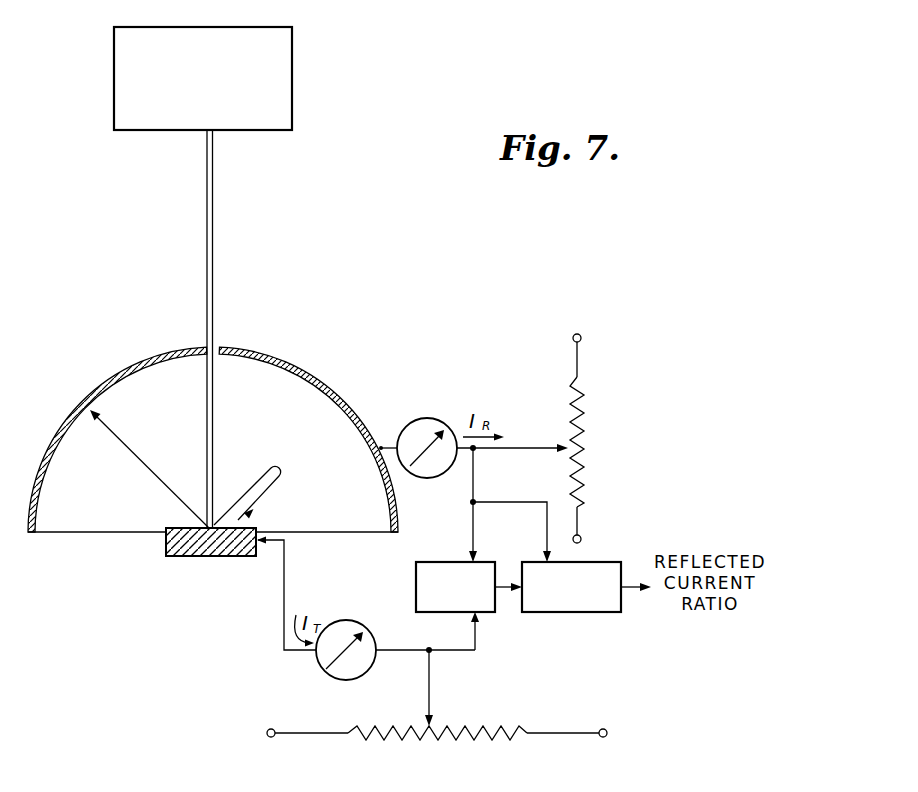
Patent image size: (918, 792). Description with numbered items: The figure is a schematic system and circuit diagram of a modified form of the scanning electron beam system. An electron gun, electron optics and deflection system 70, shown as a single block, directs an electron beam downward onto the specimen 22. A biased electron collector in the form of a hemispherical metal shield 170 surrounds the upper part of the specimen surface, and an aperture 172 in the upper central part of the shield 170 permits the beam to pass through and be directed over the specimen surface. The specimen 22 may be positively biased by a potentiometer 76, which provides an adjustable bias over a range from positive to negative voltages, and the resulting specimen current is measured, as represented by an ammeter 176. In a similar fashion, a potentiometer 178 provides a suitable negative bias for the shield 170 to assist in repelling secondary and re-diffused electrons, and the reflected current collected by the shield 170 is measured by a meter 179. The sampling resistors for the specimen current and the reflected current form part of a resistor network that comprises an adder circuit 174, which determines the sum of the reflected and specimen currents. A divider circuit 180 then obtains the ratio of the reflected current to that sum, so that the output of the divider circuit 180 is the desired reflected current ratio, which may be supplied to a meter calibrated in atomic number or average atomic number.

The electron gun, electron optics, and deflection system 70 is at (293, 86).
The aperture 172 is at (218, 346).
The hemispherical metal shield 170 is at (323, 379).
The specimen 22 is at (180, 550).
The meter 179 is at (425, 417).
The potentiometer 178 is at (582, 409).
The adder circuit 174 is at (417, 600).
The divider circuit 180 is at (572, 612).
The ammeter 176 is at (363, 675).
The potentiometer 76 is at (451, 737).